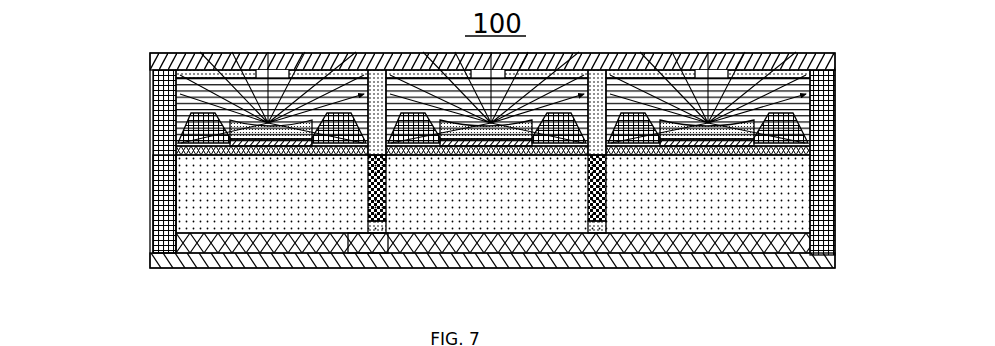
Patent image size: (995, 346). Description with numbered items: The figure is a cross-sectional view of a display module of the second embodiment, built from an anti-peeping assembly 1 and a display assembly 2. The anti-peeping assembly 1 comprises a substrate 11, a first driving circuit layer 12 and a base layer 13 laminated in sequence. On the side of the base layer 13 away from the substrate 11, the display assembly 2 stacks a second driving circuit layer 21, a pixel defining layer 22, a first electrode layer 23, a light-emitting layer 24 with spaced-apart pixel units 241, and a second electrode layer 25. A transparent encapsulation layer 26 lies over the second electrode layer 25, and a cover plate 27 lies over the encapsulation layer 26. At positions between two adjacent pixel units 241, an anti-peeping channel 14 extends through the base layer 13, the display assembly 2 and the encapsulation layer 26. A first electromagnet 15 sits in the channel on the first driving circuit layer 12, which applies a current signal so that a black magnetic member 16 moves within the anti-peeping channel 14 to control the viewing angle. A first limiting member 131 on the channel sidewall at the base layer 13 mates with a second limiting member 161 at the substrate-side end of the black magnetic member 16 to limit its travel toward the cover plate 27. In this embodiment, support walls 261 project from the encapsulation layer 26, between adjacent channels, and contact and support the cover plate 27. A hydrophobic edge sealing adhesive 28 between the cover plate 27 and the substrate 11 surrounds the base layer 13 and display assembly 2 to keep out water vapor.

The anti-peeping assembly 1 is at (85, 203).
The display assembly 2 is at (53, 38).
The substrate 11 is at (172, 255).
The first driving circuit layer 12 is at (152, 238).
The base layer 13 is at (167, 213).
The anti-peeping channel 14 is at (360, 188).
The first electromagnet 15 is at (352, 224).
The black magnetic member 16 is at (187, 208).
The second limiting member 161 is at (380, 218).
The first limiting member 131 is at (380, 148).
The second driving circuit layer 21 is at (360, 170).
The pixel defining layer 22 is at (170, 143).
The first electrode layer 23 is at (172, 134).
The light-emitting layer 24 is at (152, 113).
The pixel unit 241 is at (204, 128).
The second electrode layer 25 is at (168, 92).
The encapsulation layer 26 is at (160, 67).
The support wall 261 is at (707, 62).
The cover plate 27 is at (142, 46).
The edge sealing adhesive 28 is at (812, 178).